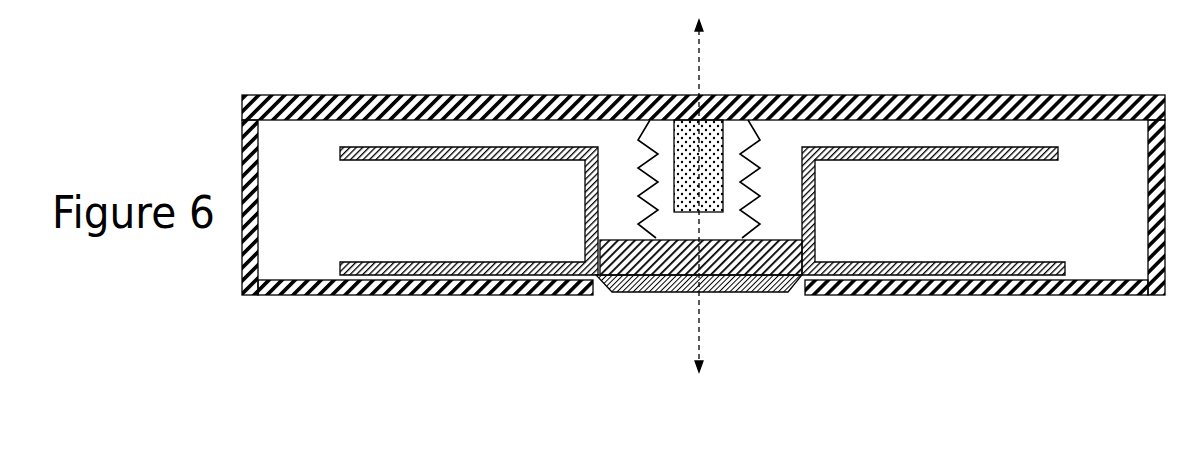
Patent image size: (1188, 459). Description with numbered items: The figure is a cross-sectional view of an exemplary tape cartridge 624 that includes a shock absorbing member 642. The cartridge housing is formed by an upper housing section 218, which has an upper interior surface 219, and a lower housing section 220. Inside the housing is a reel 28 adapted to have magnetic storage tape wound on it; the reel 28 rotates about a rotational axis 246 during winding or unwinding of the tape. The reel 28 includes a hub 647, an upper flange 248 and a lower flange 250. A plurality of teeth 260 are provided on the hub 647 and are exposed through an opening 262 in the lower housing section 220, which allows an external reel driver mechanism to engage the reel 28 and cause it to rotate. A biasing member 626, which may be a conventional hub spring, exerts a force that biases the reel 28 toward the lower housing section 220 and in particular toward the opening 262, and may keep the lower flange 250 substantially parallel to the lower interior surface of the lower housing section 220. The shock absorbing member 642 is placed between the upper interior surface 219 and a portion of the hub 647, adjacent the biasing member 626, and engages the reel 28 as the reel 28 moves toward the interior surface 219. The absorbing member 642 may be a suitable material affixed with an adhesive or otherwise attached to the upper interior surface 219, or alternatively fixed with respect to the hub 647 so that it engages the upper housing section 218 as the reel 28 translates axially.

The cartridge 624 is at (680, 205).
The upper housing section 218 is at (913, 105).
The upper interior surface 219 is at (862, 123).
The lower housing section 220 is at (427, 295).
The reel 28 is at (674, 202).
The upper flange 248 is at (402, 147).
The lower flange 250 is at (353, 275).
The teeth 260 is at (620, 288).
The hub 647 is at (777, 248).
The biasing member 626 is at (648, 133).
The shock absorbing member 642 is at (714, 133).
The rotational axis 246 is at (703, 325).
The opening 262 is at (634, 342).